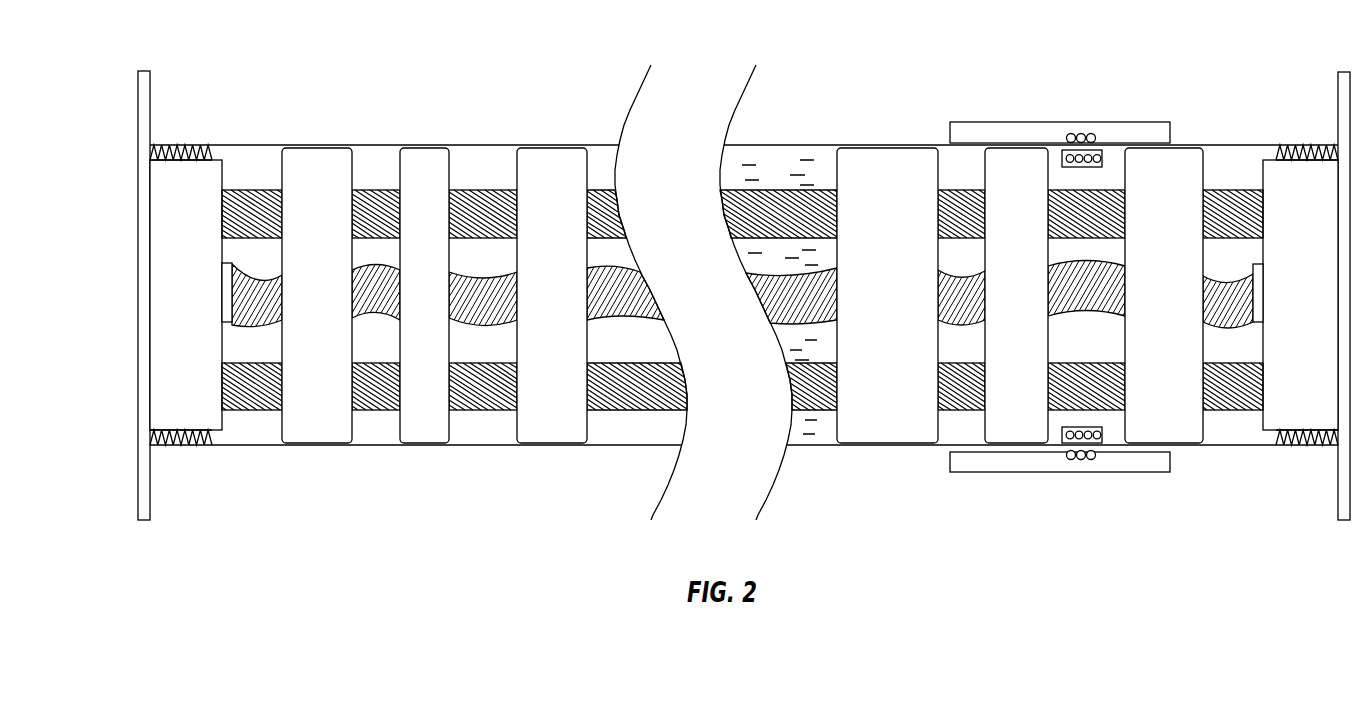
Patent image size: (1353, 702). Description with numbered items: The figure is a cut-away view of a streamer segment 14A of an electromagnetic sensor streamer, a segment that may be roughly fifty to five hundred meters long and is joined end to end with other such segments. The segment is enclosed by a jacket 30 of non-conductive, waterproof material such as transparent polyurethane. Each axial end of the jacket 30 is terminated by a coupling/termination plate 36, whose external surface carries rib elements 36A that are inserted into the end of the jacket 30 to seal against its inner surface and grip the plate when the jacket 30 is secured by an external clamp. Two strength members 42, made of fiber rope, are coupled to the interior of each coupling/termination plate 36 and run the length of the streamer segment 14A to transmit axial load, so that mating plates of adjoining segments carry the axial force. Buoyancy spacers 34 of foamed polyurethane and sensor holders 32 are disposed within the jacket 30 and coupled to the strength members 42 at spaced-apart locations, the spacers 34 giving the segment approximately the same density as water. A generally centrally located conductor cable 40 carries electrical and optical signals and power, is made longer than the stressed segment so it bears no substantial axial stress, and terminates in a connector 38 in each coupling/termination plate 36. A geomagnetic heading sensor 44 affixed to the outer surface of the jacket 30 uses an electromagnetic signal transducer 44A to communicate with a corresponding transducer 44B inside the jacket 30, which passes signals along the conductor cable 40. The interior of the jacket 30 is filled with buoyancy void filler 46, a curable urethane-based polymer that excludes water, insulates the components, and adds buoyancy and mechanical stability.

The streamer segment 14A is at (585, 57).
The jacket 30 is at (491, 144).
The sensor holder 32 is at (315, 152).
The buoyancy spacer 34 is at (550, 152).
The coupling/termination plate 36 is at (152, 405).
The rib elements 36A is at (185, 146).
The connector 38 is at (230, 265).
The conductor cable 40 is at (278, 325).
The strength members 42 is at (355, 192).
The geomagnetic heading sensor 44 is at (990, 122).
The electromagnetic signal transducer 44A is at (1081, 133).
The transducer 44B is at (1102, 158).
The buoyancy void filler 46 is at (803, 425).